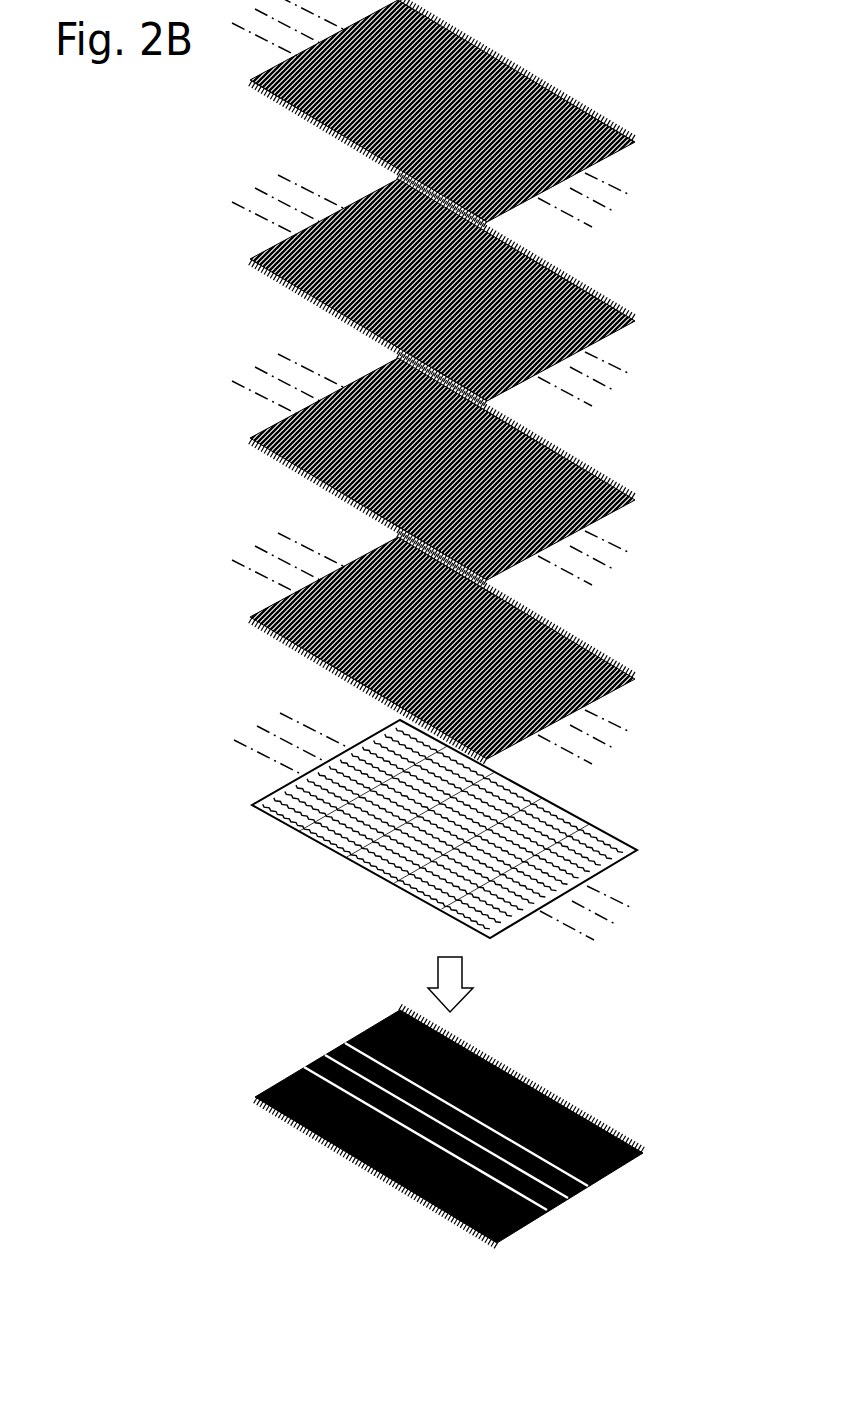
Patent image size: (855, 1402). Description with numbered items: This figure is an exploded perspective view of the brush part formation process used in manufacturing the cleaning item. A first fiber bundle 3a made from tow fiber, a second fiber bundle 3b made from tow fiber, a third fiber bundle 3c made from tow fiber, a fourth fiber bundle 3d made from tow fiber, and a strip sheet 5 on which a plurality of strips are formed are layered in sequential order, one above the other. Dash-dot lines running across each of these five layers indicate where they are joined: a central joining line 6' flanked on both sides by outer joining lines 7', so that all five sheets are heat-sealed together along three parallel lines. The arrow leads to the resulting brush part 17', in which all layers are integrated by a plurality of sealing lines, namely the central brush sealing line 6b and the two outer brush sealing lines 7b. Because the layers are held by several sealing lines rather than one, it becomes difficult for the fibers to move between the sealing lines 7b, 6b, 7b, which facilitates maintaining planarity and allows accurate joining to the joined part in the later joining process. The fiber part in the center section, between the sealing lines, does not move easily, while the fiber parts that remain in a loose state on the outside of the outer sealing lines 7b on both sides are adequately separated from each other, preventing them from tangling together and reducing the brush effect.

The first fiber bundle 3a is at (285, 110).
The second fiber bundle 3b is at (285, 289).
The third fiber bundle 3c is at (285, 468).
The fourth fiber bundle 3d is at (285, 647).
The strip sheet 5 is at (294, 828).
The joining line 6' is at (466, 487).
The joining line 7' is at (474, 496).
The brush part 17' is at (430, 1132).
The brush sealing line 6b is at (563, 1182).
The brush sealing line 7b is at (566, 1172).